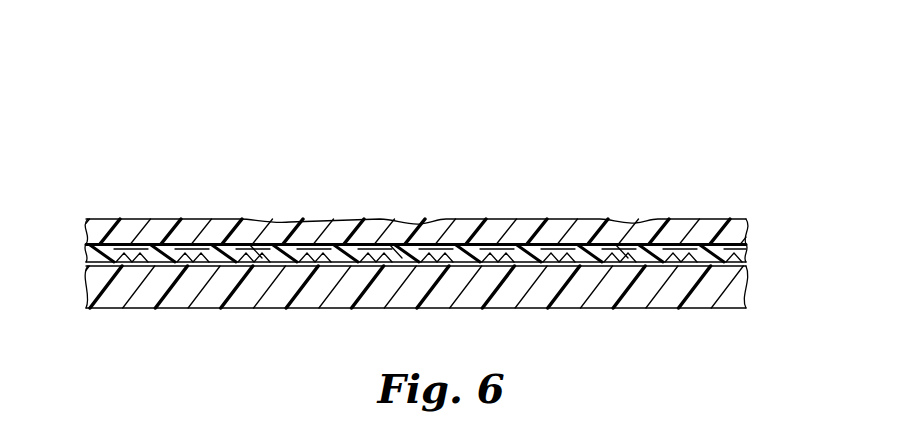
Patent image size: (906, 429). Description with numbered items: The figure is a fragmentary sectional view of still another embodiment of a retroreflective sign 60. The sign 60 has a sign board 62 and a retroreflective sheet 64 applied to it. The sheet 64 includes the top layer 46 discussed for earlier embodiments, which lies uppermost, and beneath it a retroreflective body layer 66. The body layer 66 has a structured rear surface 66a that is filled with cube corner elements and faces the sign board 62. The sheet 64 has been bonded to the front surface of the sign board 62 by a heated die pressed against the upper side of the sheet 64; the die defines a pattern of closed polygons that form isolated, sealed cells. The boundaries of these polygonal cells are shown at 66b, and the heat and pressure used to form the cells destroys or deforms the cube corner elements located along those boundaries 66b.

The sign 60 is at (425, 251).
The retroreflective sheet 64 is at (423, 261).
The top layer 46 is at (497, 225).
The retroreflective body layer 66 is at (448, 261).
The structured rear surface 66a is at (494, 263).
The boundaries of the polygonal cells 66b is at (258, 260).
The sign board 62 is at (307, 300).